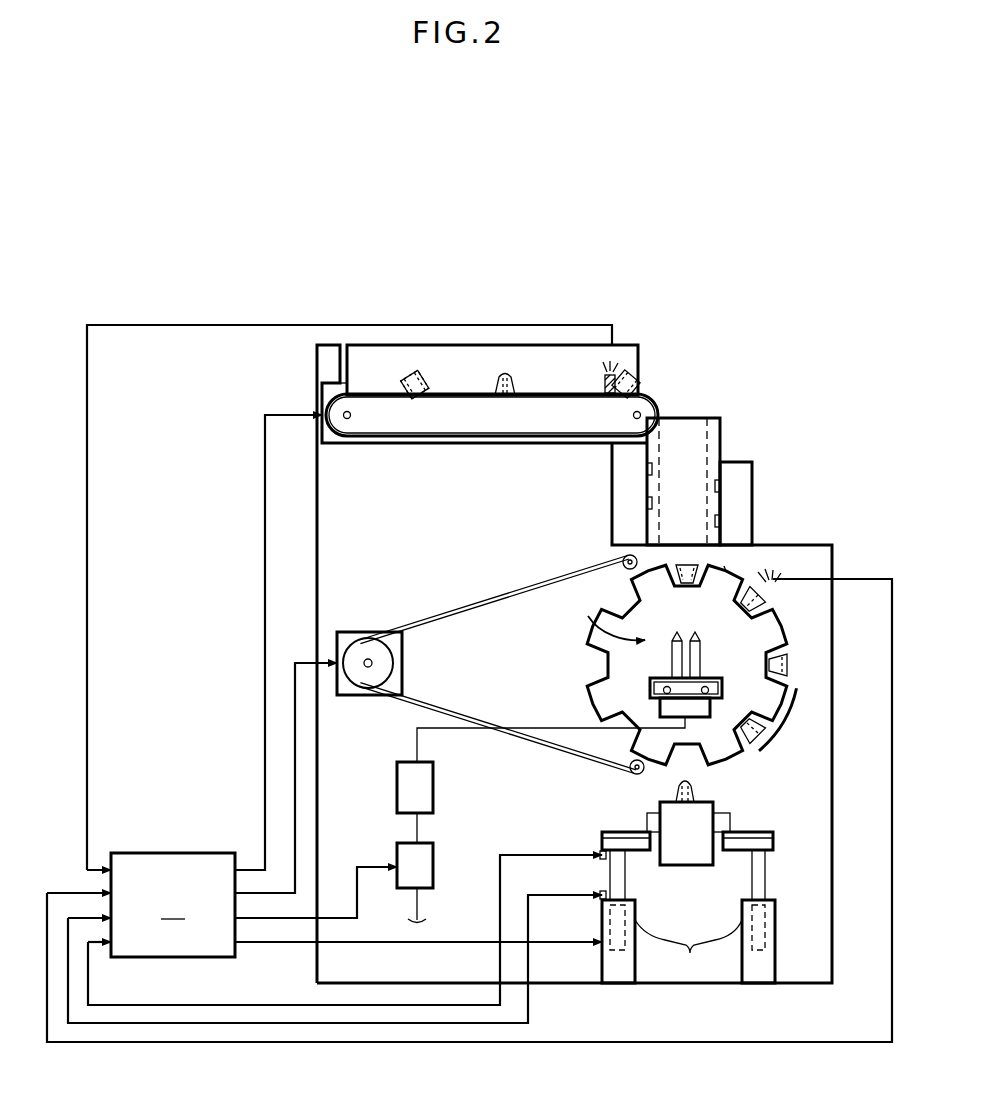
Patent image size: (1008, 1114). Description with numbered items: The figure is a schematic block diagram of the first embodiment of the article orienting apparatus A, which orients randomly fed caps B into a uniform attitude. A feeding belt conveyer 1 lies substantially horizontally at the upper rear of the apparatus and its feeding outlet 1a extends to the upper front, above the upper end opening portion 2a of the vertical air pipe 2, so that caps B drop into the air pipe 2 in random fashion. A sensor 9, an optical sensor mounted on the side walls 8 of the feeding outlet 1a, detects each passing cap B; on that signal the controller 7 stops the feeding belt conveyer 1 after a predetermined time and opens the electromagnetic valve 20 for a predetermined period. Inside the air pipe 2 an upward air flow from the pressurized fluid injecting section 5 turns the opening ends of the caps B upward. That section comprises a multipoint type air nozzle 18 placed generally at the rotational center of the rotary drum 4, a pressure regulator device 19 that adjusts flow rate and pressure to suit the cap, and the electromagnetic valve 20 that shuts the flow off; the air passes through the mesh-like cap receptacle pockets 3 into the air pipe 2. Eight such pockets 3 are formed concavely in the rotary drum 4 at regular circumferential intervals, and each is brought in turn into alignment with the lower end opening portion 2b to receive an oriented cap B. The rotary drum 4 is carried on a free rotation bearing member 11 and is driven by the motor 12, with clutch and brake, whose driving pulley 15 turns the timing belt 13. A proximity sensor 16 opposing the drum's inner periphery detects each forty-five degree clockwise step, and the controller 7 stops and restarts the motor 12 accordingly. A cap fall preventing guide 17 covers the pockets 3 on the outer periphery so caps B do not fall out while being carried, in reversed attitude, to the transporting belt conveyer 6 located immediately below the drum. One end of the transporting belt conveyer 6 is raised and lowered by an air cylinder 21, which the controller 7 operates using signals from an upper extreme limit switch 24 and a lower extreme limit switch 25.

The feeding belt conveyer 1 is at (460, 362).
The feeding outlet 1a is at (652, 400).
The vertical flow passage (air pipe) 2 is at (721, 440).
The upper end opening portion 2a is at (697, 418).
The lower end opening portion 2b is at (642, 547).
The cap receptacle pockets 3 is at (724, 566).
The rotary drum 4 is at (777, 637).
The pressurized fluid injecting section 5 is at (602, 618).
The transporting belt conveyer 6 is at (697, 842).
The controller 7 is at (173, 905).
The side walls 8 is at (576, 346).
The sensor 9 is at (612, 373).
The free rotation bearing member 11 is at (622, 562).
The motor 12 is at (355, 632).
The timing belt 13 is at (468, 610).
The driving pulley 15 is at (368, 683).
The proximity sensor 16 is at (768, 580).
The cap fall preventing guide 17 is at (790, 720).
The multipoint type air nozzle 18 is at (695, 665).
The pressure regulator device 19 is at (427, 790).
The electromagnetic valve 20 is at (427, 865).
The air cylinder 21 is at (688, 917).
The upper extreme limit switch 24 is at (600, 853).
The lower extreme limit switch 25 is at (600, 897).
The article orienting apparatus A is at (778, 457).
The articles (cap) B is at (412, 372).